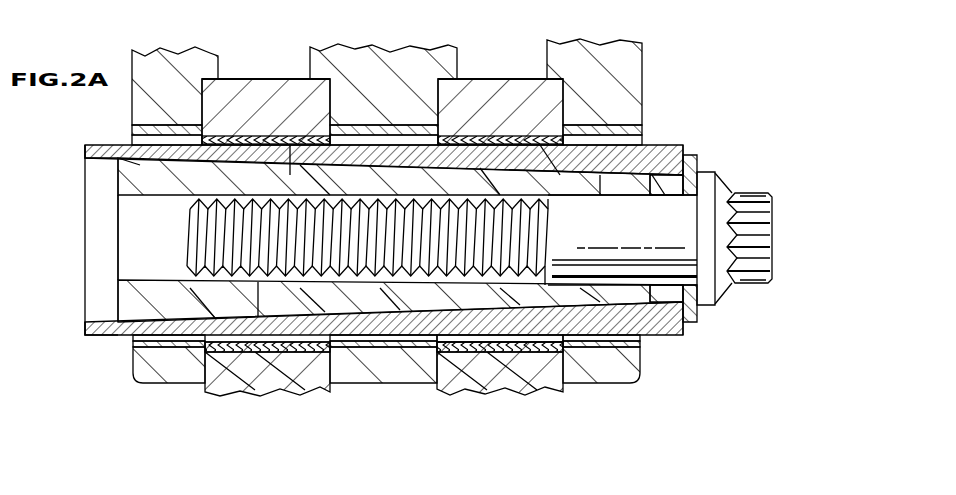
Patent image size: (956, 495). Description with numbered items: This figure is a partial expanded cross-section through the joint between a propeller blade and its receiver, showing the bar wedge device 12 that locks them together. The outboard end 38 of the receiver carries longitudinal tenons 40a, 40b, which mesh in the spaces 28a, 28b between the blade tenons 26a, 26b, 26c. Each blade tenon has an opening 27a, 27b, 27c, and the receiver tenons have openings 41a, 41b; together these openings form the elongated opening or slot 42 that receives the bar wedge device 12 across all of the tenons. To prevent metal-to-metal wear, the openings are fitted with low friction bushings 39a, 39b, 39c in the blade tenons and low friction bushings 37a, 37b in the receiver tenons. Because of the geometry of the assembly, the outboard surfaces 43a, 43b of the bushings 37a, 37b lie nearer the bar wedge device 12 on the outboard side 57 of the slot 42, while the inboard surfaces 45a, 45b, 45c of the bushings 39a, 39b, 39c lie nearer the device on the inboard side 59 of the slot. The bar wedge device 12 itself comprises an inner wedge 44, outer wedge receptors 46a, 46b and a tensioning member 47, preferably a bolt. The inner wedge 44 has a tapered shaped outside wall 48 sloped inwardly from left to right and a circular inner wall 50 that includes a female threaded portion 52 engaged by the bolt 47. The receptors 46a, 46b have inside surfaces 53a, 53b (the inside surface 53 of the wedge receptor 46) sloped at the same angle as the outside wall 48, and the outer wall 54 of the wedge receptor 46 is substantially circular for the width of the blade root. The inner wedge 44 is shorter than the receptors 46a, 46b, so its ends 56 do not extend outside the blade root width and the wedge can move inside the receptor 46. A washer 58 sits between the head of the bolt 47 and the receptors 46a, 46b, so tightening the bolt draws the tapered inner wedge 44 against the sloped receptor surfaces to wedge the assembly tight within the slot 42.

The bar wedge device 12 is at (708, 112).
The tenon of blade 26a is at (172, 376).
The tenon of blade 26b is at (387, 372).
The tenon of blade 26c is at (590, 376).
The opening of tenon 27a is at (180, 144).
The opening of tenon 27b is at (400, 168).
The opening of tenon 27c is at (620, 182).
The space 28a is at (212, 82).
The space 28b is at (452, 82).
The low friction bushing 37a is at (243, 354).
The low friction bushing 37b is at (532, 354).
The outboard end of receiver 38 is at (658, 40).
The low friction bushing 39a is at (133, 340).
The low friction bushing 39b is at (388, 344).
The low friction bushing 39c is at (640, 338).
The tenon of receiver 40a is at (268, 378).
The tenon of receiver 40b is at (505, 382).
The opening of tenon 41a is at (305, 310).
The opening of tenon 41b is at (508, 305).
The elongated opening or slot 42 is at (128, 135).
The outboard surface of bushing 43a is at (302, 182).
The outboard surface of bushing 43b is at (480, 150).
The inner wedge 44 is at (118, 190).
The inboard surface of bushing 45a is at (190, 316).
The inboard surface of bushing 45b is at (398, 308).
The inboard surface of bushing 45c is at (590, 302).
The wedge receptor 46 is at (100, 337).
The outer wedge receptor 46a is at (678, 145).
The outer wedge receptor 46b is at (680, 338).
The tensioning member 47 is at (773, 240).
The tapered shaped outside wall 48 is at (555, 170).
The circular inner wall 50 is at (176, 202).
The female threaded portion 52 is at (478, 150).
The inside surface of wedge receptor 53 is at (258, 312).
The inside surface of wedge receptor 53a is at (90, 160).
The inside surface of wedge receptor 53b is at (100, 325).
The outer wall of wedge receptor 54 is at (655, 145).
The ends of inner wedge 56 is at (662, 192).
The outboard side of opening 57 is at (350, 145).
The washer 58 is at (700, 162).
The inboard side of opening 59 is at (480, 352).